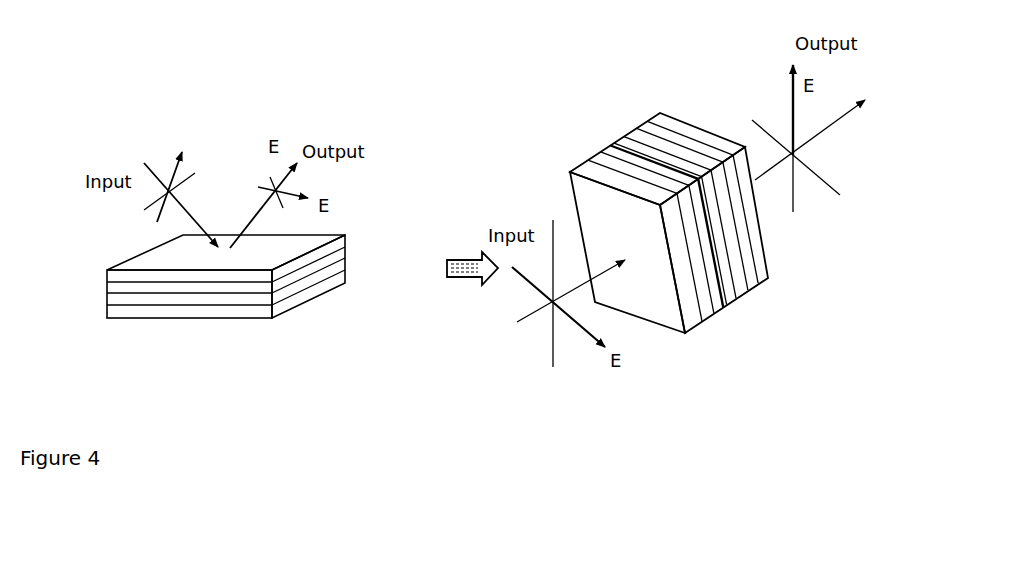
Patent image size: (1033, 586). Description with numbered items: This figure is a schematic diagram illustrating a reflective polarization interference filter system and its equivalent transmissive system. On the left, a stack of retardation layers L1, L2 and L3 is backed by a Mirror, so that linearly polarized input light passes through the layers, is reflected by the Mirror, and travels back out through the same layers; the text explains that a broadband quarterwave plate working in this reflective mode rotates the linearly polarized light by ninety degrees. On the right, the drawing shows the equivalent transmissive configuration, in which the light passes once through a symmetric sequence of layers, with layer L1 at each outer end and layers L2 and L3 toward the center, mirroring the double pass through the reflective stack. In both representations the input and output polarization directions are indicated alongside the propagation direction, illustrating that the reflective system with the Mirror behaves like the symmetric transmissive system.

The first layer with phase retardation φ1 L1 is at (337, 246).
The second layer with phase retardation φ2 L2 is at (752, 283).
The third layer with phase retardation φ3 L3 is at (337, 269).
The mirror Mirror is at (232, 305).